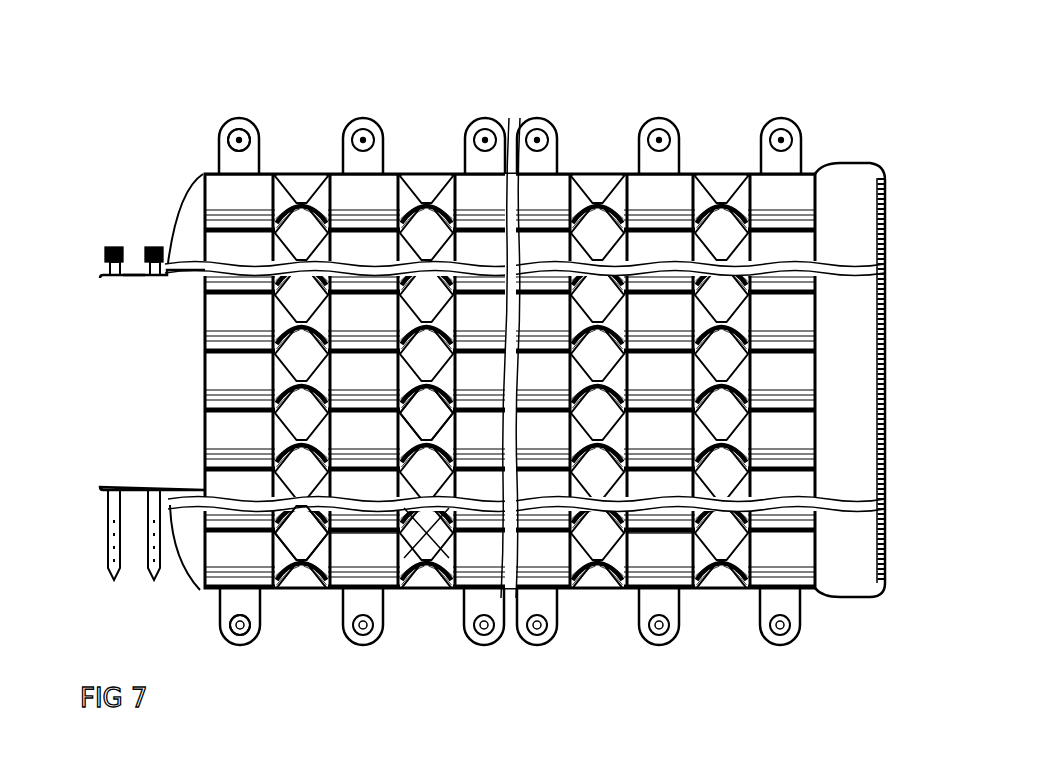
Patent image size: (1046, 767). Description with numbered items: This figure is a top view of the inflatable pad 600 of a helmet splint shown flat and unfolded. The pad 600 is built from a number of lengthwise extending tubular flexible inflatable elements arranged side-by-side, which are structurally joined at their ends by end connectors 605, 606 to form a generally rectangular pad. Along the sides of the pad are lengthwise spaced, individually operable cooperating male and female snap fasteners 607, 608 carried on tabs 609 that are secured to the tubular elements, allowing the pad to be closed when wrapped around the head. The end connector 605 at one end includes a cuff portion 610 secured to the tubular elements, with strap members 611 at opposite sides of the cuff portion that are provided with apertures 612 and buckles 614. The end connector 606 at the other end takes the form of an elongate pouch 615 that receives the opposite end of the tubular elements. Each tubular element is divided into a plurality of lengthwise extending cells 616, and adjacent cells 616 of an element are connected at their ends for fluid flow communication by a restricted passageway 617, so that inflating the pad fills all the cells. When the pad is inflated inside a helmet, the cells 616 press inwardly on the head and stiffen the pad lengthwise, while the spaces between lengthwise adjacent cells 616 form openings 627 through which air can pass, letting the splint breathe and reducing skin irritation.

The inflatable pad 600 is at (620, 620).
The end connector 605 is at (136, 245).
The end connector 606 is at (856, 184).
The male snap fastener 607 is at (237, 637).
The female snap fastener 608 is at (259, 132).
The tab 609 is at (242, 119).
The cuff portion 610 is at (152, 382).
The strap member 611 is at (152, 581).
The aperture 612 is at (160, 557).
The buckle 614 is at (157, 247).
The elongate pouch 615 is at (857, 578).
The cell 616 is at (511, 560).
The restricted passageway 617 is at (364, 473).
The opening 627 is at (425, 533).